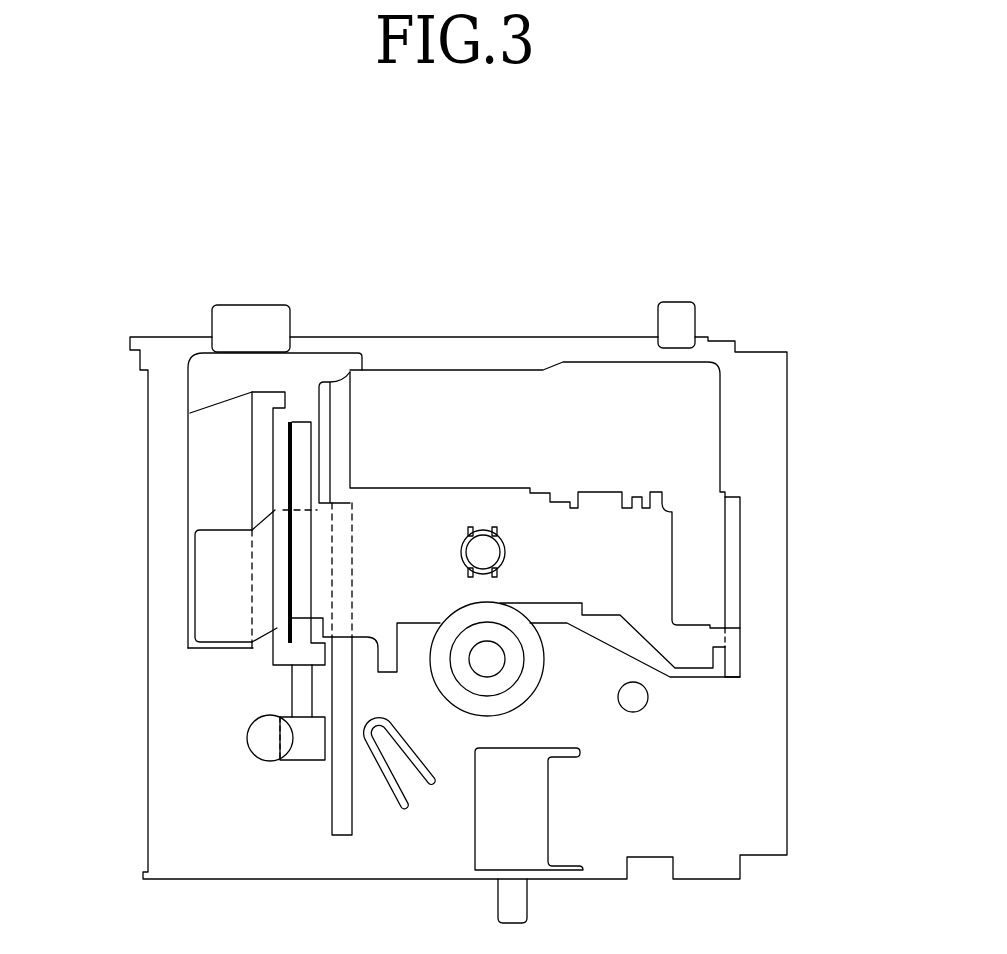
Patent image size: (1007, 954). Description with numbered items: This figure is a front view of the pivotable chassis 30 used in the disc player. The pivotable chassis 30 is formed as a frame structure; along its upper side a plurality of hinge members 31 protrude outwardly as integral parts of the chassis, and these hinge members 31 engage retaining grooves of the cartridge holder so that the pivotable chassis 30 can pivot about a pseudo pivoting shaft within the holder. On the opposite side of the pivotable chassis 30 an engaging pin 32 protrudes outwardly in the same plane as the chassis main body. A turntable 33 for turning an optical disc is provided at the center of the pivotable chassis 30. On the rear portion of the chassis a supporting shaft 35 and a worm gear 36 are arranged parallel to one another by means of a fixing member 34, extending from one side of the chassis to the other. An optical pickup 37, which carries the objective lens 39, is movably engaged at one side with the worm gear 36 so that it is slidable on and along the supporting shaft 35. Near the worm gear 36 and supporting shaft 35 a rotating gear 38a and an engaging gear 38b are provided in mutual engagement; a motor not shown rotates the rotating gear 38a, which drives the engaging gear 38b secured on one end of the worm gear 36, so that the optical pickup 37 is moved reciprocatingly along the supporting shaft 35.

The pivotable chassis 30 is at (777, 540).
The hinge member 31 is at (253, 312).
The engaging pin 32 is at (518, 903).
The turntable 33 is at (503, 668).
The fixing member 34 is at (323, 363).
The supporting shaft 35 is at (342, 425).
The worm gear 36 is at (300, 453).
The optical pickup 37 is at (596, 512).
The rotating gear 38a is at (257, 737).
The engaging gear 38b is at (302, 753).
The objective lens 39 is at (483, 543).